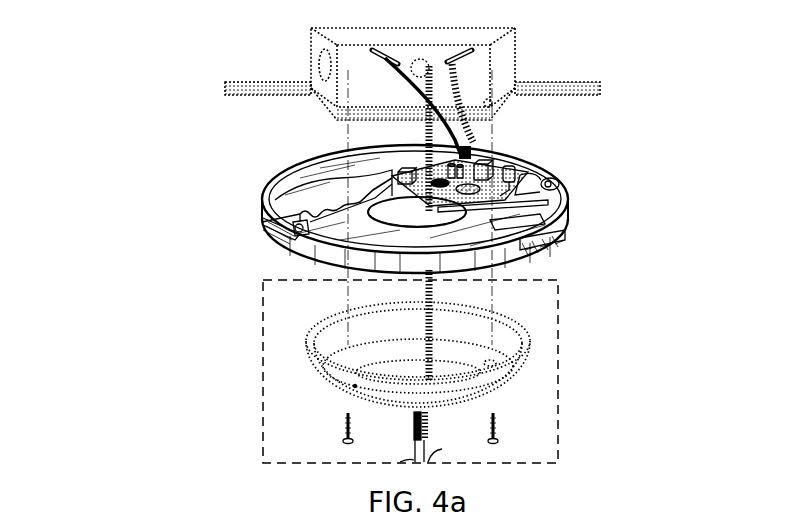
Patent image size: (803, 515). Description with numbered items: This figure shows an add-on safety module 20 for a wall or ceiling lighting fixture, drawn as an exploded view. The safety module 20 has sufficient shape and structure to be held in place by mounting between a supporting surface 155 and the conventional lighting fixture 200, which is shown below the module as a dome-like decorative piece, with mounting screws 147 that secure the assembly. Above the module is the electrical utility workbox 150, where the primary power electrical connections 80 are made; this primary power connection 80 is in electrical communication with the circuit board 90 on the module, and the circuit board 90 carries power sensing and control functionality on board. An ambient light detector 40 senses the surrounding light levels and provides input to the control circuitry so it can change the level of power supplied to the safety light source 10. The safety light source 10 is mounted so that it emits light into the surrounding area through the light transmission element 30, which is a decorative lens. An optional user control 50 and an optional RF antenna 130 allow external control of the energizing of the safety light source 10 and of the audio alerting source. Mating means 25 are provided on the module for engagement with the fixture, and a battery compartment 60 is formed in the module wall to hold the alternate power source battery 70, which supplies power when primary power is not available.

The safety light source 10 is at (267, 218).
The safety module 20 is at (267, 183).
The mating means 25 is at (297, 230).
The light transmission element 30 is at (263, 230).
The ambient light detector 40 is at (552, 183).
The user control 50 is at (473, 143).
The battery compartment 60 is at (550, 247).
The alternate power source battery 70 is at (565, 233).
The primary power electrical connections 80 is at (455, 127).
The circuit board 90 is at (497, 168).
The RF antenna 130 is at (515, 178).
The mounting screw 147 is at (490, 432).
The electrical utility workbox 150 is at (357, 75).
The supporting surface 155 is at (305, 105).
The conventional lighting fixture 200 is at (258, 392).